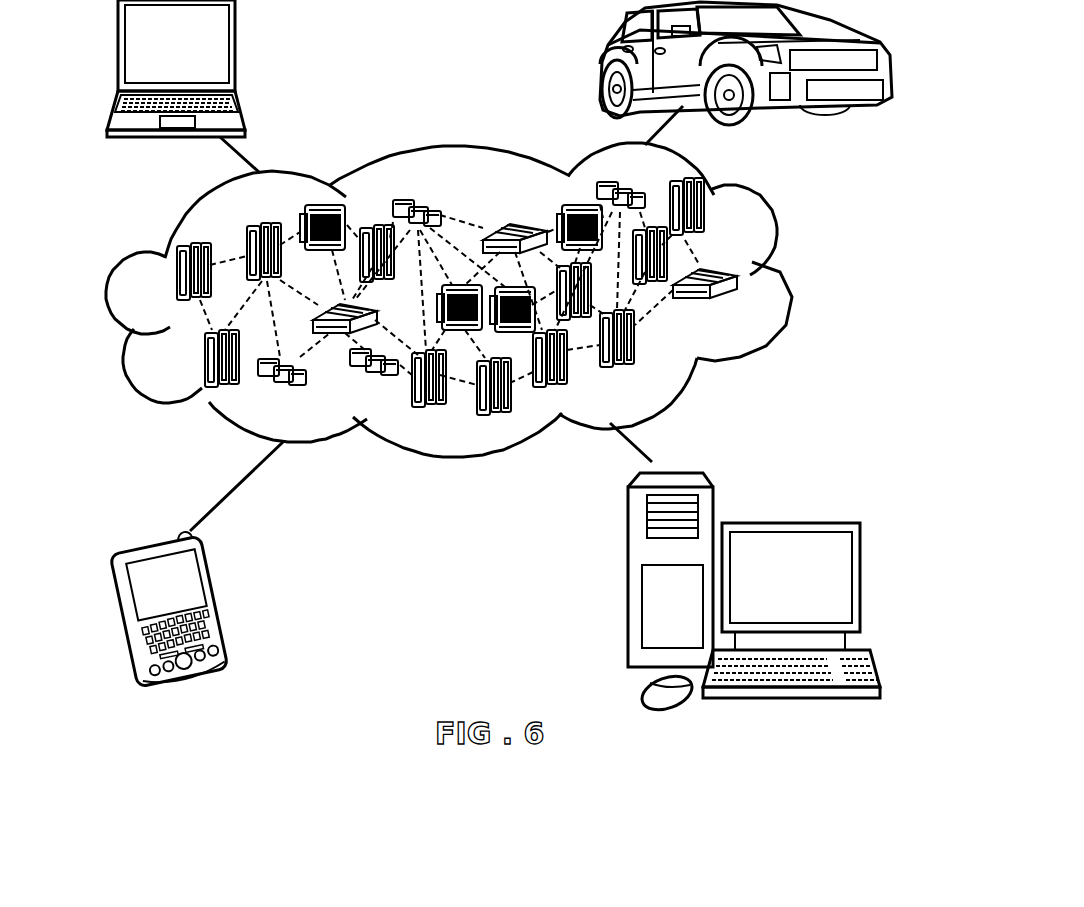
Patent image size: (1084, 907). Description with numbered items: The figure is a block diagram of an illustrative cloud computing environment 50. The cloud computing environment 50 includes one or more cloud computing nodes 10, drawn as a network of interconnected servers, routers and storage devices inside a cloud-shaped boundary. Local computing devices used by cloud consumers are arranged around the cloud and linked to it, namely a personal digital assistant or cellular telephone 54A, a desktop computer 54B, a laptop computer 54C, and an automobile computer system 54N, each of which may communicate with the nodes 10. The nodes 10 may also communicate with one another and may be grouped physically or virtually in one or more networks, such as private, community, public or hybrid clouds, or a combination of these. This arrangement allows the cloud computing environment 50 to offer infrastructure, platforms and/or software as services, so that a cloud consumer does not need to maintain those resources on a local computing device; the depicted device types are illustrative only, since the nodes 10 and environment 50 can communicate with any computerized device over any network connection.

The cloud computing environment 50 is at (788, 283).
The cloud computing nodes 10 is at (748, 308).
The personal digital assistant (PDA) or cellular telephone 54A is at (224, 605).
The desktop computer 54B is at (790, 522).
The laptop computer 54C is at (236, 50).
The automobile computer system 54N is at (605, 62).